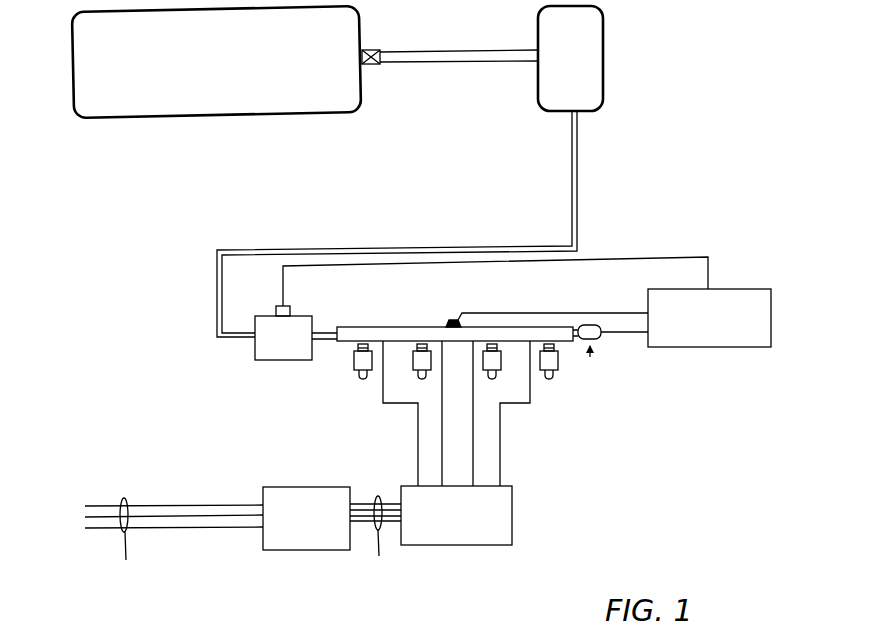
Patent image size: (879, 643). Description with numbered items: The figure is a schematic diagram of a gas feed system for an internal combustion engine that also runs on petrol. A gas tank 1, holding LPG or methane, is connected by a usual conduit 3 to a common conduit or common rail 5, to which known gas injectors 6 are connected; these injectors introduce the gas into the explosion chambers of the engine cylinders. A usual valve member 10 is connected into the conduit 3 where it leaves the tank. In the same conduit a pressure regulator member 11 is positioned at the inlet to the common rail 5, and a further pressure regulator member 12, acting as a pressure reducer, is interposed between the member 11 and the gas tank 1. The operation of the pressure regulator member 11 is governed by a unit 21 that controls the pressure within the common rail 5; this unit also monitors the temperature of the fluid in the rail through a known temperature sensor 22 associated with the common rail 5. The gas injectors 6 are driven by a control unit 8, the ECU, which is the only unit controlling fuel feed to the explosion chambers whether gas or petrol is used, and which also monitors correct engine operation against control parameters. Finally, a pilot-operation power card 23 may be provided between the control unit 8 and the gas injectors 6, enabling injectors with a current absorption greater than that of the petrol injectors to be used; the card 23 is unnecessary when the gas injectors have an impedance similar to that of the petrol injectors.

The gas tank 1 is at (118, 119).
The valve member 10 is at (379, 52).
The further pressure regulator member 12 is at (648, 32).
The conduit 3 is at (577, 171).
The pressure regulator member 11 is at (250, 356).
The common rail 5 is at (376, 327).
The temperature sensor 22 is at (455, 320).
The unit controlling pressure 21 is at (739, 287).
The gas injectors 6 is at (414, 361).
The control unit 8 is at (307, 537).
The pilot-operation power card 23 is at (512, 545).